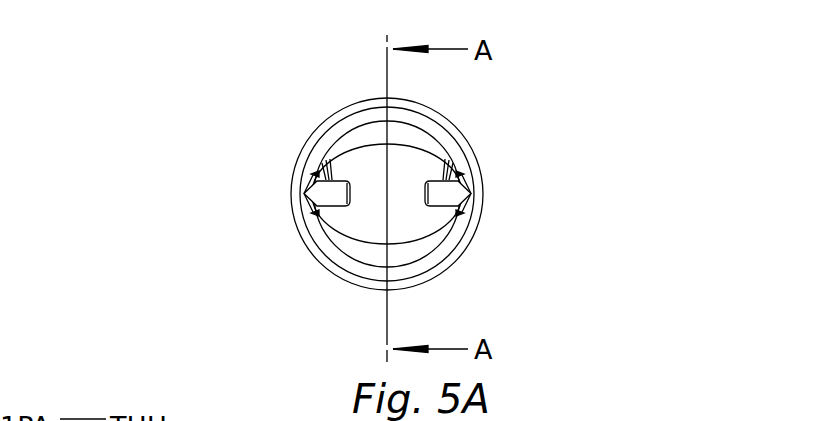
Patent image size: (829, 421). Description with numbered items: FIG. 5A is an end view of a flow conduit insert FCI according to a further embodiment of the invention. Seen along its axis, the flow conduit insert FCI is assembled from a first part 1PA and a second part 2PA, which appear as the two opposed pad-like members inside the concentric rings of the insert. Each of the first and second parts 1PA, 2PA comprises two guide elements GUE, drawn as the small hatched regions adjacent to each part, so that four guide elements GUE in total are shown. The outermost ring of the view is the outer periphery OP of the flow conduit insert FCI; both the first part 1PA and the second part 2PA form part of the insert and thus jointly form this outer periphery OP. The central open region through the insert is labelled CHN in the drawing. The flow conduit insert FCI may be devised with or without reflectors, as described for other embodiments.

The flow conduit insert FCI is at (227, 124).
The channel CHN is at (362, 168).
The first part 1PA is at (303, 215).
The second part 2PA is at (457, 148).
The outer periphery OP is at (482, 190).
The guide element GUE is at (335, 197).